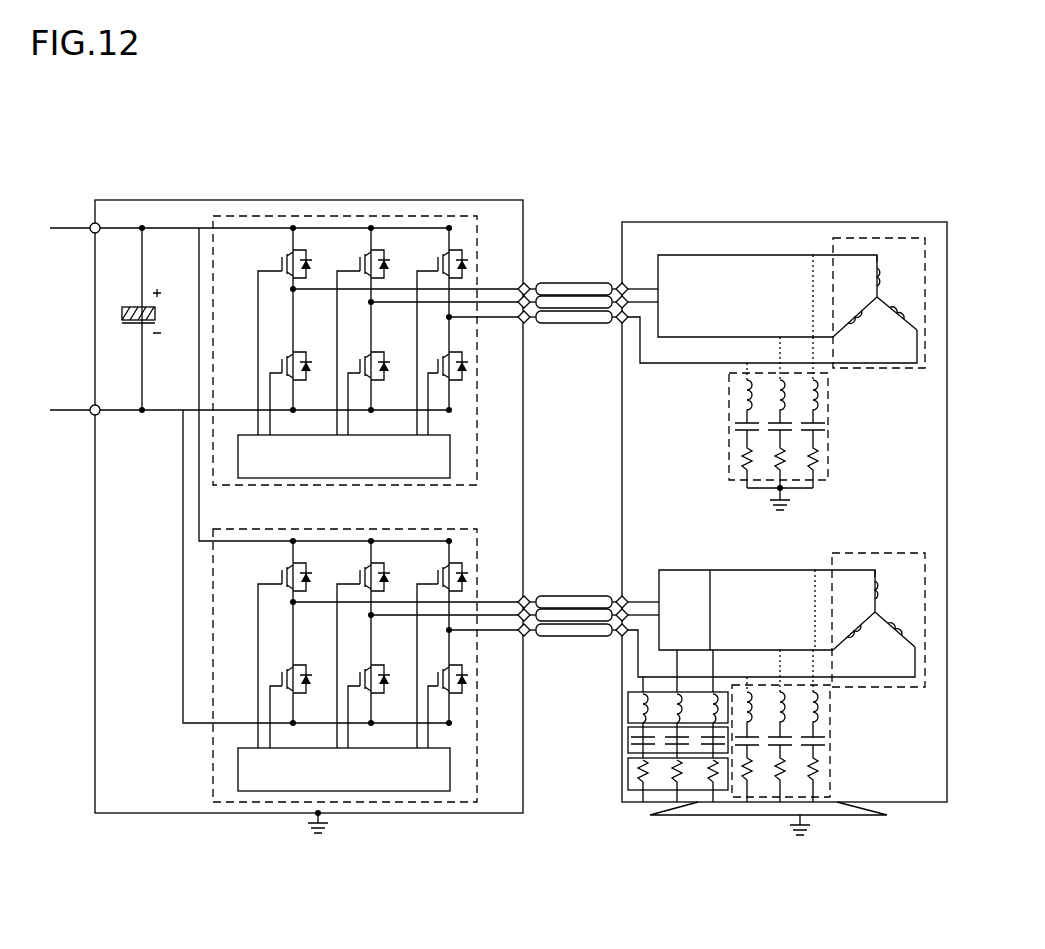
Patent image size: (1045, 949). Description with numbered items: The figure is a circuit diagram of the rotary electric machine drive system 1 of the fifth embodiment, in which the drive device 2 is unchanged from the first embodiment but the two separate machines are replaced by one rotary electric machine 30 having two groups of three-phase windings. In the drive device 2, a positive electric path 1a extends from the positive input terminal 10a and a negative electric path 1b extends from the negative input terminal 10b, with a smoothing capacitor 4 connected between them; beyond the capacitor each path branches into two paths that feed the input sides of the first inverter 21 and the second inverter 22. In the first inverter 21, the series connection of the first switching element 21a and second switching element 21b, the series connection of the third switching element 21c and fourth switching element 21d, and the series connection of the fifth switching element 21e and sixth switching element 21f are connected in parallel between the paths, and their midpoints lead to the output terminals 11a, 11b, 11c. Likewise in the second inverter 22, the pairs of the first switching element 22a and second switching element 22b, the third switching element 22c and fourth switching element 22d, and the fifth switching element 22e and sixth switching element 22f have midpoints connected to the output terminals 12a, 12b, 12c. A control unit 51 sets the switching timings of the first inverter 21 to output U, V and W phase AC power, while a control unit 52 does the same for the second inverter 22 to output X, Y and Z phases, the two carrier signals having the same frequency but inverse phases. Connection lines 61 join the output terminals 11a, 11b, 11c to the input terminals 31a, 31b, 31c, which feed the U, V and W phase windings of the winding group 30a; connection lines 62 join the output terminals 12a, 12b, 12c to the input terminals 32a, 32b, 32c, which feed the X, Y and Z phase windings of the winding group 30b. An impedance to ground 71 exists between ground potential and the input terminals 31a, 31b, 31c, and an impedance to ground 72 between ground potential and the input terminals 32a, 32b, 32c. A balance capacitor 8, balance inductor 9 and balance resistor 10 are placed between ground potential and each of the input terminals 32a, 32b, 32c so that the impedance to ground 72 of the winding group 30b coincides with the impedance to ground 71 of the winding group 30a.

The rotary electric machine drive system 1 is at (614, 180).
The drive device 2 is at (485, 194).
The smoothing capacitor 4 is at (133, 322).
The balance capacitor 8 is at (628, 737).
The balance inductor 9 is at (628, 700).
The balance resistor 10 is at (628, 772).
The positive input terminal 10a is at (90, 223).
The negative input terminal 10b is at (90, 406).
The positive electric path 1a is at (190, 231).
The negative electric path 1b is at (182, 415).
The output terminal 11a is at (527, 285).
The output terminal 11b is at (520, 306).
The output terminal 11c is at (528, 323).
The output terminal 12a is at (527, 599).
The output terminal 12b is at (520, 620).
The output terminal 12c is at (528, 638).
The first inverter 21 is at (476, 252).
The first switching element 21a is at (282, 246).
The second switching element 21b is at (361, 246).
The third switching element 21c is at (440, 246).
The fourth switching element 21d is at (283, 352).
The fifth switching element 21e is at (361, 352).
The sixth switching element 21f is at (440, 352).
The second inverter 22 is at (476, 567).
The first switching element 22a is at (282, 559).
The second switching element 22b is at (361, 559).
The third switching element 22c is at (440, 559).
The fourth switching element 22d is at (283, 665).
The fifth switching element 22e is at (361, 665).
The sixth switching element 22f is at (440, 665).
The rotary electric machine 30 is at (893, 221).
The winding group 30a is at (893, 370).
The winding group 30b is at (893, 687).
The input terminal 31a is at (623, 284).
The input terminal 31b is at (618, 322).
The input terminal 31c is at (643, 304).
The input terminal 32a is at (623, 598).
The input terminal 32b is at (618, 637).
The input terminal 32c is at (643, 618).
The control unit 51 is at (450, 456).
The control unit 52 is at (450, 769).
The connection lines 61 is at (590, 282).
The connection lines 62 is at (590, 596).
The impedance to ground 71 is at (829, 432).
The impedance to ground 72 is at (831, 747).